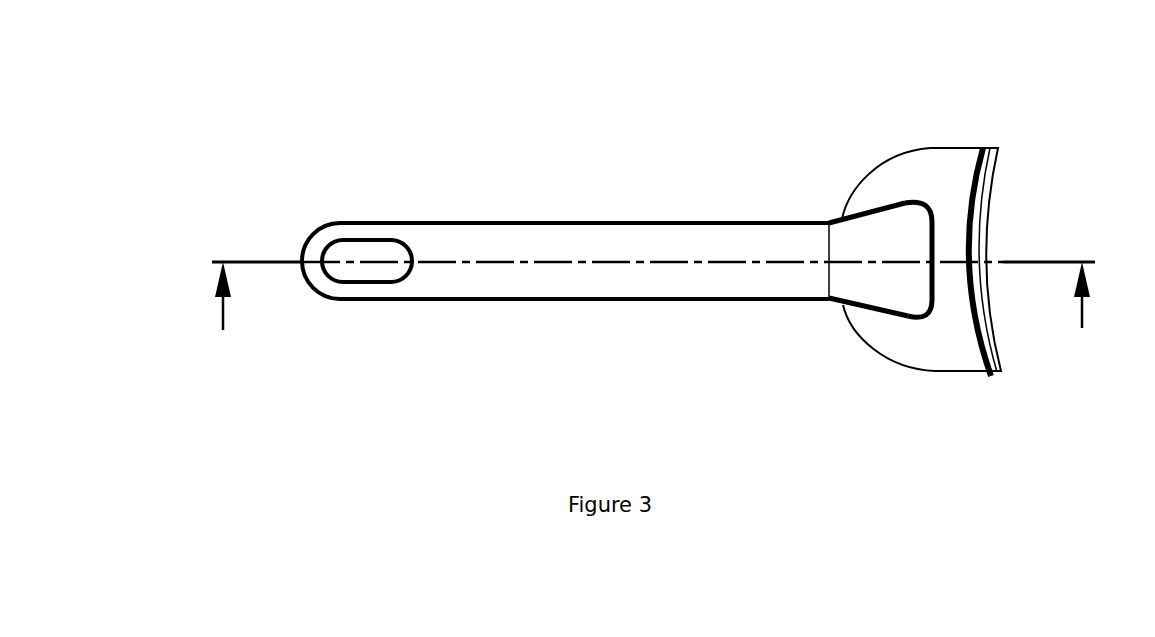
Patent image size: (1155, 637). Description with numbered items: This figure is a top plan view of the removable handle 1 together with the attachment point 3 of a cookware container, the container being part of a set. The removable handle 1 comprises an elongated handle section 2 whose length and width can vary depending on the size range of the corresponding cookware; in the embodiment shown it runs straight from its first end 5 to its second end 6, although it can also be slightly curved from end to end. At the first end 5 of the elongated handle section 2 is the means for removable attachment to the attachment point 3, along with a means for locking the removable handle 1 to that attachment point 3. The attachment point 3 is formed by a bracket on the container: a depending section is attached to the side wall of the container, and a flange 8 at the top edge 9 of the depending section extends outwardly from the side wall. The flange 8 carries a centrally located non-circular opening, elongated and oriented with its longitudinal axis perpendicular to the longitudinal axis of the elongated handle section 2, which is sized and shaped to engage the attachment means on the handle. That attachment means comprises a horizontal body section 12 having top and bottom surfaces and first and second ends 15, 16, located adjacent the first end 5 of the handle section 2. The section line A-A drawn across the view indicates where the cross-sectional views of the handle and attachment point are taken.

The removable handle 1 is at (388, 329).
The elongated handle section 2 is at (565, 237).
The attachment point 3 is at (868, 140).
The first end 5 is at (817, 237).
The second end 6 is at (335, 228).
The flange 8 is at (947, 173).
The top edge 9 is at (990, 376).
The horizontal body section 12 is at (872, 283).
The first end 15 is at (920, 280).
The second end 16 is at (838, 280).